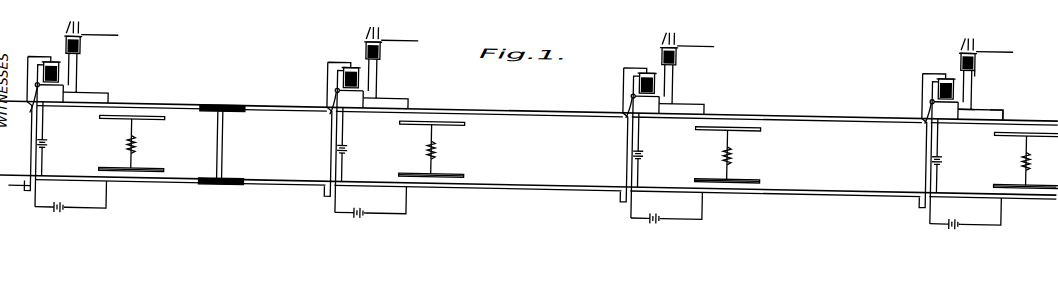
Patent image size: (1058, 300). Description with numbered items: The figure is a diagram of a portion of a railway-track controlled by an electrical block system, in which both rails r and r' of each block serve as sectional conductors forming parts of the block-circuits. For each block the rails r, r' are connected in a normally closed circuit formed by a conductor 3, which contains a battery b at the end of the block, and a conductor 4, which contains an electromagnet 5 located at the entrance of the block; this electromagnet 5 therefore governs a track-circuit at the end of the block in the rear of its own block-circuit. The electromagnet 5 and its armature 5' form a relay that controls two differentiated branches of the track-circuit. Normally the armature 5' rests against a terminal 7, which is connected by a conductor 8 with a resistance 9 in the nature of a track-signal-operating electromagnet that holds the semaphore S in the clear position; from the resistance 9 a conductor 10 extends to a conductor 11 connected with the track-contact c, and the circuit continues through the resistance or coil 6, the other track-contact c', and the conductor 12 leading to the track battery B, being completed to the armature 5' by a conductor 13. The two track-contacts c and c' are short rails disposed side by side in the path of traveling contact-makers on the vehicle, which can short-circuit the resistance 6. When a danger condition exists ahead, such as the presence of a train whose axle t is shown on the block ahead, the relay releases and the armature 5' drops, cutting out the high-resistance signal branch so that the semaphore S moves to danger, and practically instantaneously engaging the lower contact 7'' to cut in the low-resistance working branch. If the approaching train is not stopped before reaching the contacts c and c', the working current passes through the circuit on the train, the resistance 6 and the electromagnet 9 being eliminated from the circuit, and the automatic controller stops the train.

The conductor 3 is at (640, 132).
The conductor 4 is at (628, 128).
The electromagnet 5 is at (498, 70).
The armature 5' is at (479, 121).
The resistance or coil 6 is at (728, 145).
The terminal 7 is at (512, 85).
The contact 7'' is at (523, 112).
The conductor 8 is at (976, 57).
The resistance 9 is at (79, 44).
The conductor 10 is at (975, 90).
The conductor 11 is at (1003, 92).
The conductor 12 is at (704, 212).
The conductor 13 is at (634, 190).
The battery b is at (496, 152).
The track battery B is at (506, 225).
The track-contact c is at (578, 150).
The track-contact c' is at (578, 173).
The rail r is at (529, 113).
The rail r' is at (528, 199).
The semaphore S is at (539, 35).
The axle t is at (221, 145).